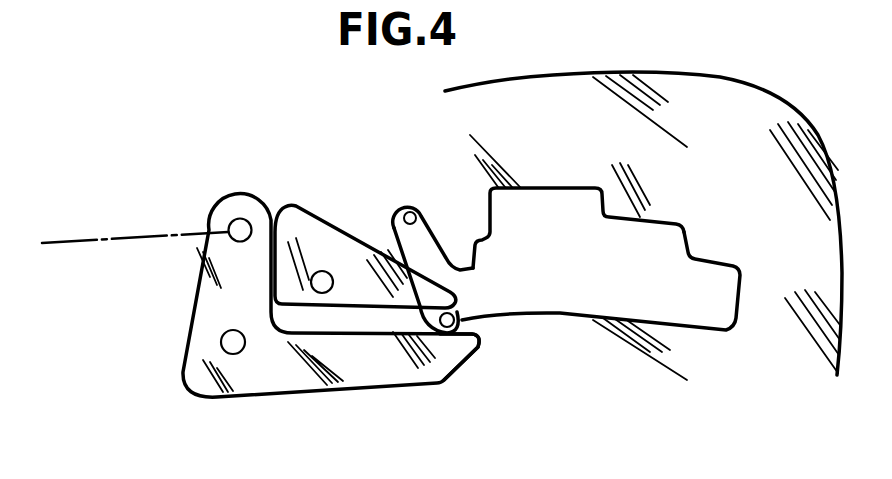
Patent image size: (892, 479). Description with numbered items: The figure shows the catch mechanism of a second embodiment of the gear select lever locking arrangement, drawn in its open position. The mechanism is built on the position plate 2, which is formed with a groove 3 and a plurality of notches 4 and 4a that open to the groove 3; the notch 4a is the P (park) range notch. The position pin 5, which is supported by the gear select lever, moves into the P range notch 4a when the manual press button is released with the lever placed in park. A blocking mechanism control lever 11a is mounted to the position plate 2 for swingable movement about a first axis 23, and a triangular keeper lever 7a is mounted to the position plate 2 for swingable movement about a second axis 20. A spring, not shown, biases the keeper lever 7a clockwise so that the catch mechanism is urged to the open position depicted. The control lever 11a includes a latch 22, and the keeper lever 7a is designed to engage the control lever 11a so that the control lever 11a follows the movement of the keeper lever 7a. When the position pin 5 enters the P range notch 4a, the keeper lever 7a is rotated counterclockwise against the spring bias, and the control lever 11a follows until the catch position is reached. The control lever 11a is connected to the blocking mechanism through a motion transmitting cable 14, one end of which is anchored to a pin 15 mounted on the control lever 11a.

The position plate 2 is at (669, 90).
The groove 3 is at (630, 318).
The notch 4 is at (562, 189).
The P range notch 4a is at (420, 215).
The position pin 5 is at (456, 316).
The keeper lever 7a is at (330, 246).
The blocking mechanism control lever 11a is at (257, 212).
The motion transmitting cable 14 is at (145, 242).
The pin 15 is at (234, 227).
The second axis 20 is at (323, 283).
The latch 22 is at (433, 357).
The first axis 23 is at (232, 343).